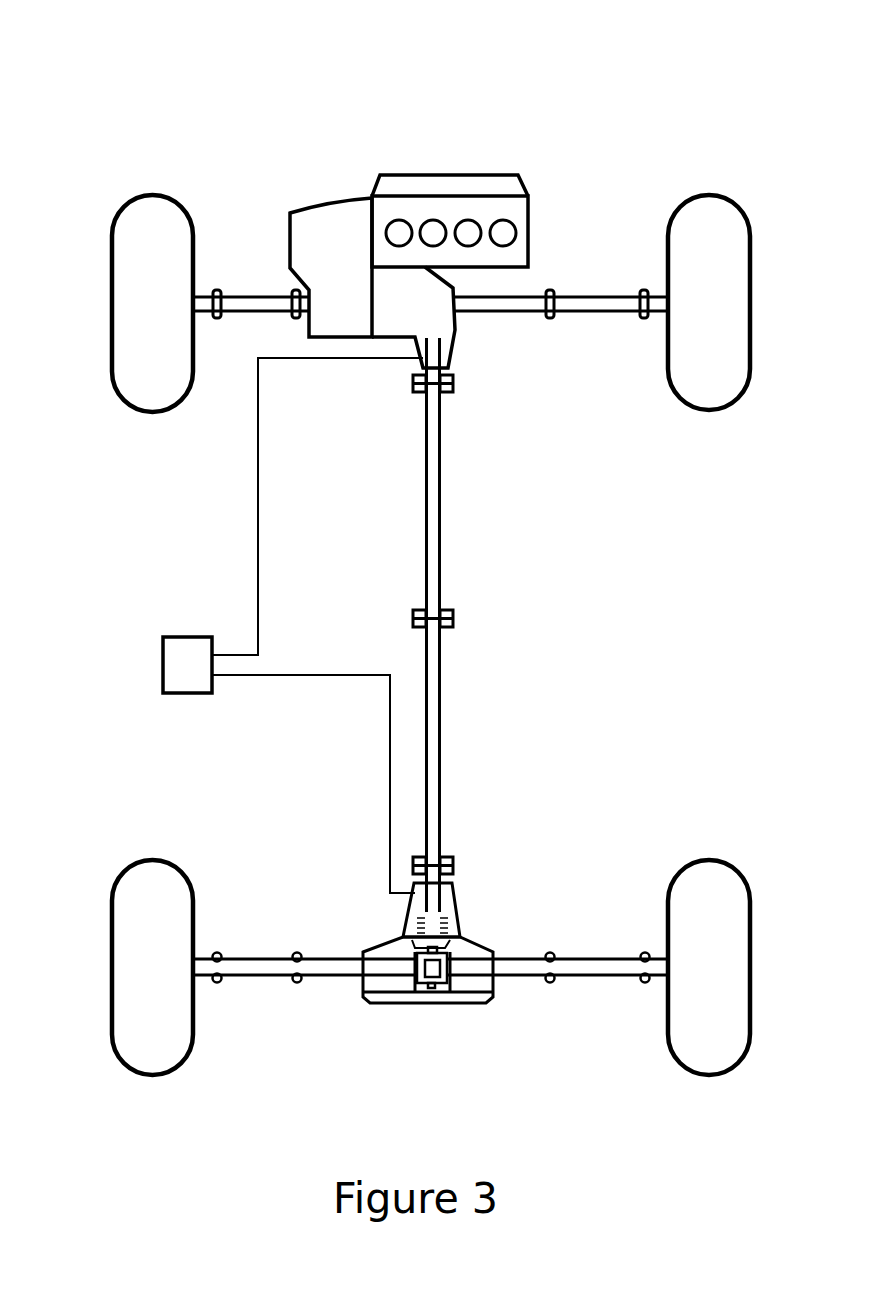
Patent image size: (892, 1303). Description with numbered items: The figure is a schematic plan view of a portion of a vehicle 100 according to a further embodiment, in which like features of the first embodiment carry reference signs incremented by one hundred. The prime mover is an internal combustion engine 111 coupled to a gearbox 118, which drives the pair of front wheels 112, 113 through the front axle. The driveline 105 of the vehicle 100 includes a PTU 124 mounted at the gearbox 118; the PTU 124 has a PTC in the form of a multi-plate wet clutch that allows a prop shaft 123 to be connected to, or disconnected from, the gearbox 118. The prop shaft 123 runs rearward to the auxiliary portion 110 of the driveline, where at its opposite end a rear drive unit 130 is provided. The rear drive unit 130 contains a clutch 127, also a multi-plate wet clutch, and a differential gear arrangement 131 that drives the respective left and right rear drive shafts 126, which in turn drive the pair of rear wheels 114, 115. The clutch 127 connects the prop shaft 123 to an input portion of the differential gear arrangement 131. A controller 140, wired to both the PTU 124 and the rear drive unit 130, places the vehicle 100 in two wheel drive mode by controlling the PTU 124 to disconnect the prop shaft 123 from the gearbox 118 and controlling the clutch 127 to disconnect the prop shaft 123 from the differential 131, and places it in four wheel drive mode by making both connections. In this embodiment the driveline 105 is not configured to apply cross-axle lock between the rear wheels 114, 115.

The vehicle 100 is at (660, 90).
The driveline 105 is at (518, 427).
The auxiliary portion 110 is at (550, 630).
The internal combustion engine 111 is at (520, 213).
The front wheel 112 is at (140, 235).
The front wheel 113 is at (725, 235).
The rear wheel 114 is at (142, 1037).
The rear wheel 115 is at (725, 1037).
The gearbox 118 is at (322, 223).
The prop shaft 123 is at (440, 513).
The PTU 124 is at (448, 352).
The rear drive shaft 126 is at (260, 968).
The clutch 127 is at (412, 924).
The rear drive unit 130 is at (472, 940).
The differential gear arrangement 131 is at (423, 985).
The controller 140 is at (173, 653).